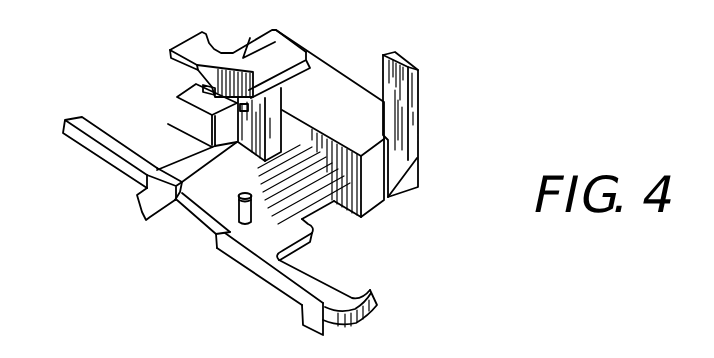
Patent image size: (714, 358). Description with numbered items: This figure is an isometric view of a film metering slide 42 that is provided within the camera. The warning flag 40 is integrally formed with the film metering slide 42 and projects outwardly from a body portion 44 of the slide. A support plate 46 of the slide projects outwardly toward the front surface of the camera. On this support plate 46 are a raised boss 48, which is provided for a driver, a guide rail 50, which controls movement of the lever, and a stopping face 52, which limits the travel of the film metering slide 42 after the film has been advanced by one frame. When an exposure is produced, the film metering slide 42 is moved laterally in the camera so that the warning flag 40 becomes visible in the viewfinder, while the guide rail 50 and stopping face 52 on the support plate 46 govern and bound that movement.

The warning flag 40 is at (404, 70).
The film metering slide 42 is at (92, 41).
The body portion 44 is at (347, 117).
The support plate 46 is at (232, 188).
The raised boss 48 is at (242, 224).
The guide rail 50 is at (97, 152).
The stopping face 52 is at (177, 95).